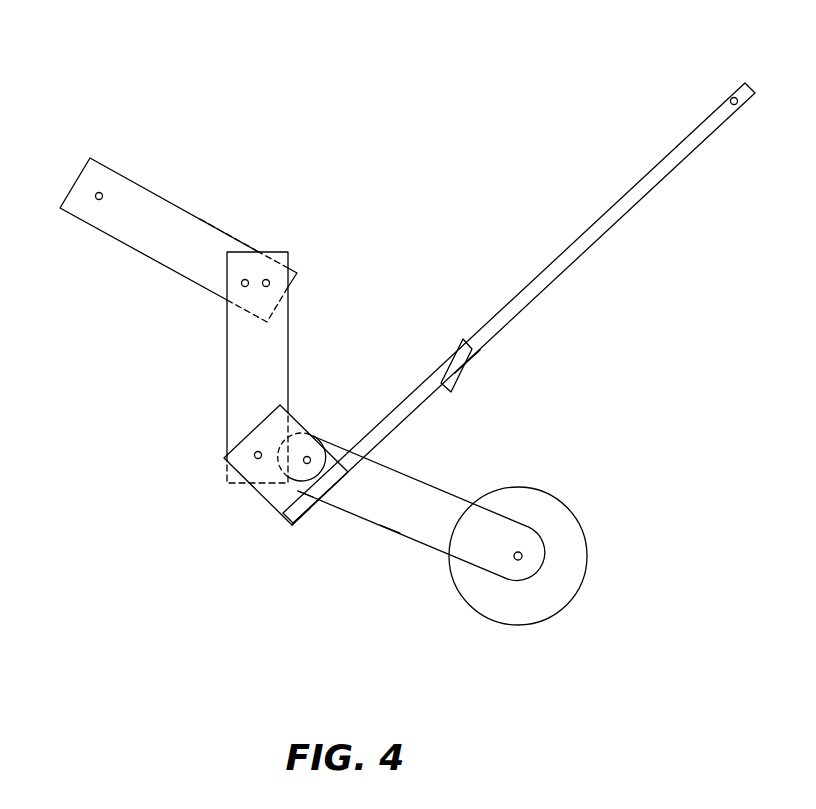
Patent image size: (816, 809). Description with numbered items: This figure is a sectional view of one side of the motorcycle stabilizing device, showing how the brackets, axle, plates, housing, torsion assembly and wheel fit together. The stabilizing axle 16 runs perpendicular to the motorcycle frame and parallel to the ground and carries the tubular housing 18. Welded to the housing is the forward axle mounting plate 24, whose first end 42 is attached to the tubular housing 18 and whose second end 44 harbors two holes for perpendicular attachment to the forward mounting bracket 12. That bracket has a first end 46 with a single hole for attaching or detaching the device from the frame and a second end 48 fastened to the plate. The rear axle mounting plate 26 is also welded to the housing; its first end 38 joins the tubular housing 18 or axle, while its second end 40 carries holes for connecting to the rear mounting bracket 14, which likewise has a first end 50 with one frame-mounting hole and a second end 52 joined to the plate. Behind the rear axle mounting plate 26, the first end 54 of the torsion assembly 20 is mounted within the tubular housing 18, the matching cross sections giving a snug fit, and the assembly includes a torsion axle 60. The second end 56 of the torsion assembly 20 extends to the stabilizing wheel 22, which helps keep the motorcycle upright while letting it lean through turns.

The forward mounting bracket 12 is at (165, 197).
The rear mounting bracket 14 is at (567, 275).
The stabilizing axle 16 is at (267, 503).
The tubular housing 18 is at (303, 432).
The torsion assembly 20 is at (410, 536).
The stabilizing wheel 22 is at (588, 540).
The forward axle mounting plate 24 is at (227, 376).
The rear axle mounting plate 26 is at (313, 498).
The first end of rear axle mounting plate 38 is at (298, 525).
The second end of rear axle mounting plate 40 is at (445, 357).
The first end of forward axle mounting plate 42 is at (255, 458).
The second end of forward axle mounting plate 44 is at (245, 287).
The first end of forward mounting bracket 46 is at (77, 178).
The second end of forward mounting bracket 48 is at (217, 243).
The first end of rear mounting bracket 50 is at (718, 102).
The second end of rear mounting bracket 52 is at (465, 377).
The first end of torsion assembly 54 is at (390, 525).
The second end of torsion assembly 56 is at (525, 573).
The torsion axle 60 is at (307, 456).